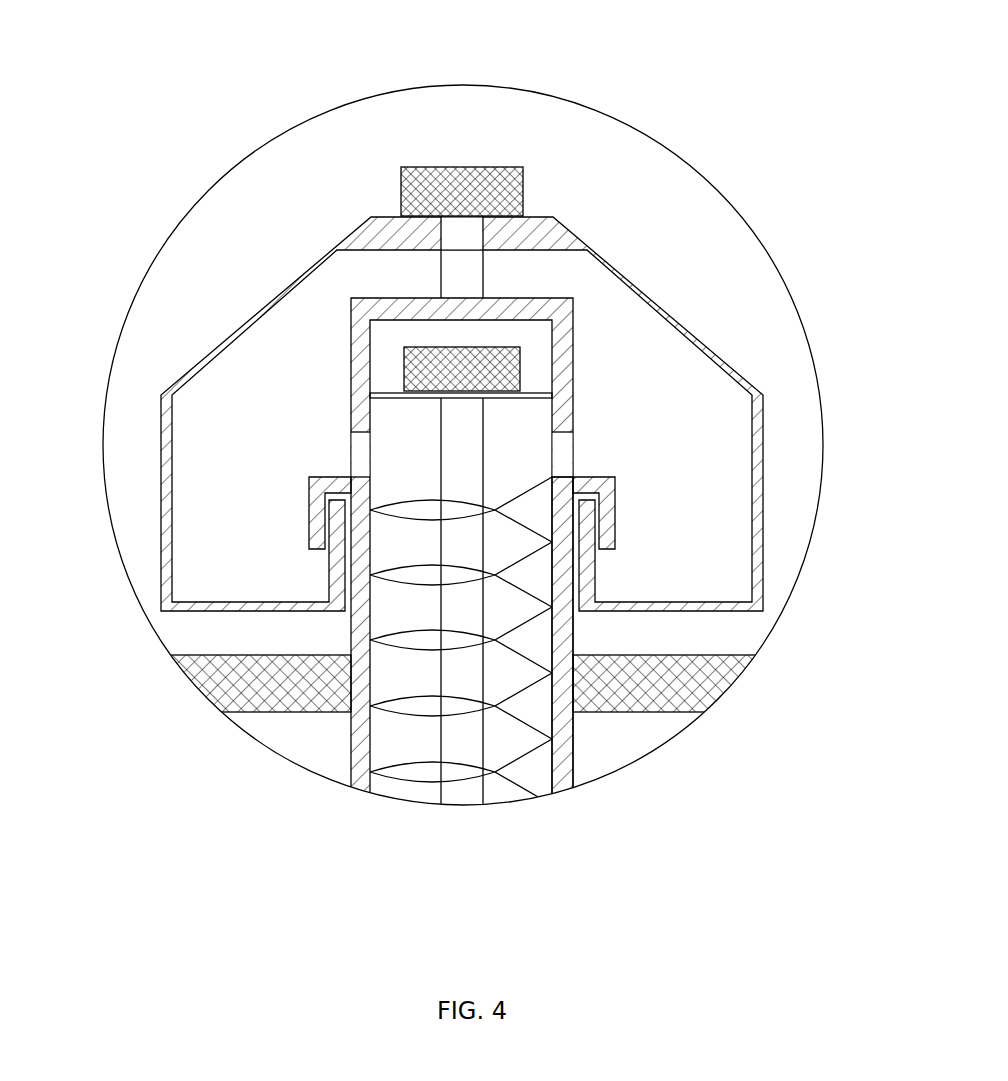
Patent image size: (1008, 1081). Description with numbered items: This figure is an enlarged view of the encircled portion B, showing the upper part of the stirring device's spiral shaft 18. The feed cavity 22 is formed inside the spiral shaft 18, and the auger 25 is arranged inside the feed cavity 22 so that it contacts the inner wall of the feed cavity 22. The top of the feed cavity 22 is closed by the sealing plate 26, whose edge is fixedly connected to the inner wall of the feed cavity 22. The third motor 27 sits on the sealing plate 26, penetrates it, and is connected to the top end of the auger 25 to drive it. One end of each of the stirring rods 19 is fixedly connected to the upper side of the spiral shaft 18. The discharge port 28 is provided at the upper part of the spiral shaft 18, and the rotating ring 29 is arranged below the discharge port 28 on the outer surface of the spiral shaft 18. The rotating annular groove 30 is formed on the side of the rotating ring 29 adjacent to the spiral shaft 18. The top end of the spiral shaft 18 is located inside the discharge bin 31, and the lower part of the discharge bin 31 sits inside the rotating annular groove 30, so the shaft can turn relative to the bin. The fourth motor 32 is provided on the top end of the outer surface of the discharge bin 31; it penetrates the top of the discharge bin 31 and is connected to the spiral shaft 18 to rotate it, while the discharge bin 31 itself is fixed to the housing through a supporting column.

The spiral shaft 18 is at (550, 740).
The stirring rods 19 is at (275, 702).
The feed cavity 22 is at (392, 752).
The auger 25 is at (462, 742).
The sealing plate 26 is at (527, 398).
The third motor 27 is at (418, 353).
The discharge port 28 is at (363, 455).
The rotating ring 29 is at (615, 513).
The rotating annular groove 30 is at (330, 493).
The discharge bin 31 is at (760, 427).
The fourth motor 32 is at (490, 172).
The portion B is at (670, 148).